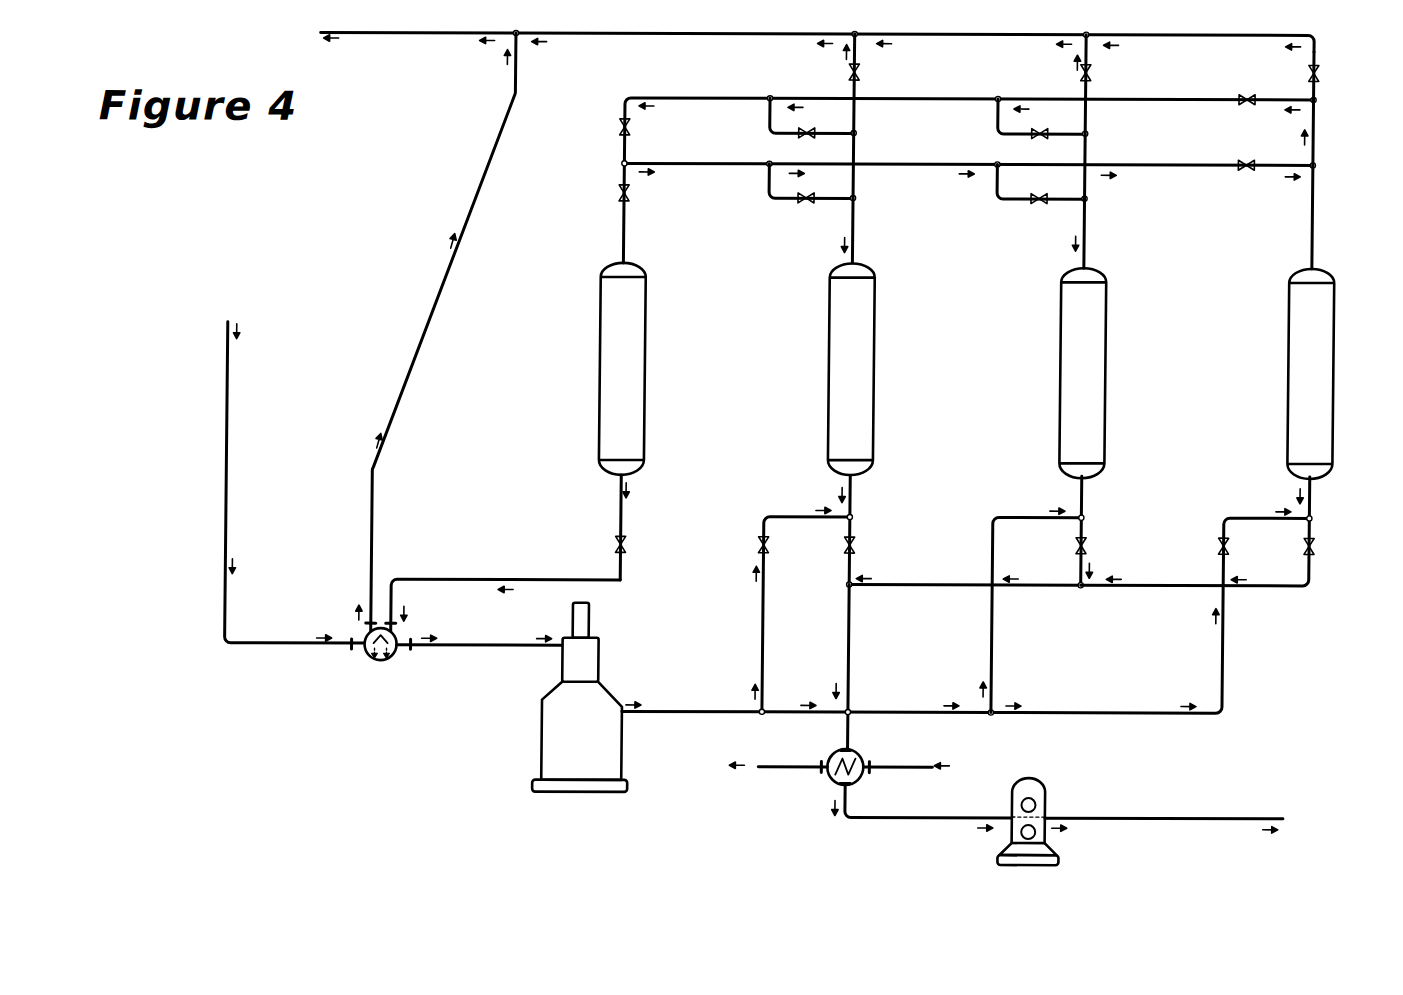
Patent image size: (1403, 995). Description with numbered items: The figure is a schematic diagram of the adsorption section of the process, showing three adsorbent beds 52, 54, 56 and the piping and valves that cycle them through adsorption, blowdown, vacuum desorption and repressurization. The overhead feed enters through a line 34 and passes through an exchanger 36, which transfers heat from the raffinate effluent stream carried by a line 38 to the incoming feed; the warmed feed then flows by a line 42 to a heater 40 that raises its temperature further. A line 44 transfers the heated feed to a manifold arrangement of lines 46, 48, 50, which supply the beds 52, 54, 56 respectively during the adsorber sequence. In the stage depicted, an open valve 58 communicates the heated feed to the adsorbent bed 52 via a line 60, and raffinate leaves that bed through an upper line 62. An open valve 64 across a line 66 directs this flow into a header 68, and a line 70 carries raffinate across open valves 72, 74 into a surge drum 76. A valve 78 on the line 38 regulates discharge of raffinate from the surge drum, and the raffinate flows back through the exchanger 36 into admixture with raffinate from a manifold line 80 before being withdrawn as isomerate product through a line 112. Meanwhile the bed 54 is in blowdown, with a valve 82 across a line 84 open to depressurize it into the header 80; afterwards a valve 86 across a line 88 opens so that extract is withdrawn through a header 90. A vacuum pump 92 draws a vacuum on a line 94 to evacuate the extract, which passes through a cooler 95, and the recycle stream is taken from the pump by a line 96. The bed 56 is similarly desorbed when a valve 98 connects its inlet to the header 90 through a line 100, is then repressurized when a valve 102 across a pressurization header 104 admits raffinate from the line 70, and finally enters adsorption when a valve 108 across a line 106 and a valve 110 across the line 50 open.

The line 34 is at (229, 370).
The exchanger 36 is at (381, 661).
The line 38 is at (523, 76).
The heater 40 is at (545, 746).
The line 42 is at (470, 646).
The line 44 is at (655, 711).
The line 46 is at (800, 513).
The line 48 is at (1038, 513).
The line 50 is at (1273, 513).
The adsorbent bed 52 is at (880, 373).
The adsorbent bed 54 is at (1110, 373).
The adsorbent bed 56 is at (1340, 373).
The valve 58 is at (765, 541).
The line 60 is at (860, 493).
The upper line 62 is at (857, 230).
The valve 64 is at (808, 135).
The line 66 is at (771, 101).
The header 68 is at (918, 96).
The line 70 is at (626, 238).
The valve 72 is at (626, 123).
The valve 74 is at (626, 189).
The surge drum 76 is at (651, 373).
The valve 78 is at (620, 541).
The manifold line 80 is at (677, 35).
The valve 82 is at (1093, 73).
The line 84 is at (1092, 116).
The valve 86 is at (1095, 543).
The line 88 is at (1088, 493).
The header 90 is at (905, 586).
The vacuum pump 92 is at (1045, 781).
The line 94 is at (942, 818).
The cooler 95 is at (862, 748).
The line 96 is at (1190, 816).
The valve 98 is at (1317, 546).
The line 100 is at (1315, 493).
The valve 102 is at (1248, 170).
The pressurization header 104 is at (1178, 158).
The line 106 is at (1320, 222).
The valve 108 is at (1322, 73).
The valve 110 is at (1235, 543).
The line 112 is at (415, 33).